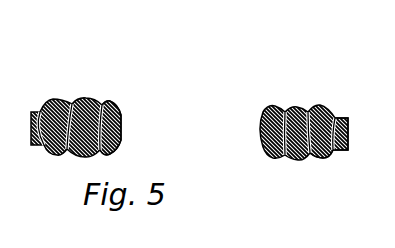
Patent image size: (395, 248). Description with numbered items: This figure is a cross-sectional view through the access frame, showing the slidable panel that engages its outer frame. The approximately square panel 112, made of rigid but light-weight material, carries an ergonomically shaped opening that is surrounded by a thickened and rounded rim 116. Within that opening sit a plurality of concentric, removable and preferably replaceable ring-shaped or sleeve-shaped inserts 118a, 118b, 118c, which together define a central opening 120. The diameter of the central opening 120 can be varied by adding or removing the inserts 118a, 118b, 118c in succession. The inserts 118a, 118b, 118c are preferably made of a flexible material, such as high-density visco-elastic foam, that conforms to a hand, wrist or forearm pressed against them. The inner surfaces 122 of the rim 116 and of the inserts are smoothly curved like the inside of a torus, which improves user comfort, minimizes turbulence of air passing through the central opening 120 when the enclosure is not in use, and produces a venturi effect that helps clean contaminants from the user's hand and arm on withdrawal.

The insert 118a is at (70, 101).
The insert 118b is at (93, 103).
The insert 118c is at (115, 104).
The central opening 120 is at (199, 134).
The inner surfaces 122 is at (265, 112).
The rim 116 is at (324, 157).
The square panel 112 is at (348, 150).